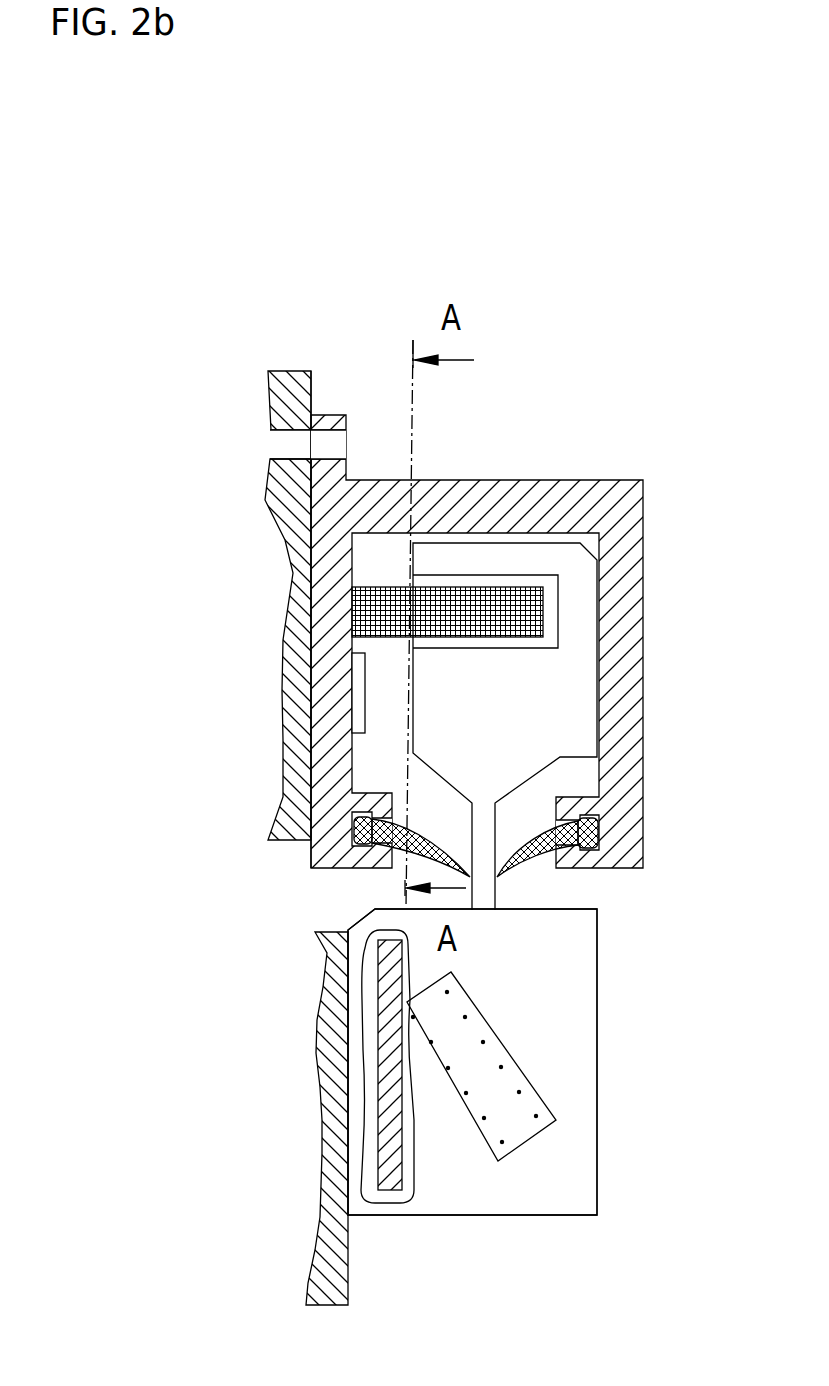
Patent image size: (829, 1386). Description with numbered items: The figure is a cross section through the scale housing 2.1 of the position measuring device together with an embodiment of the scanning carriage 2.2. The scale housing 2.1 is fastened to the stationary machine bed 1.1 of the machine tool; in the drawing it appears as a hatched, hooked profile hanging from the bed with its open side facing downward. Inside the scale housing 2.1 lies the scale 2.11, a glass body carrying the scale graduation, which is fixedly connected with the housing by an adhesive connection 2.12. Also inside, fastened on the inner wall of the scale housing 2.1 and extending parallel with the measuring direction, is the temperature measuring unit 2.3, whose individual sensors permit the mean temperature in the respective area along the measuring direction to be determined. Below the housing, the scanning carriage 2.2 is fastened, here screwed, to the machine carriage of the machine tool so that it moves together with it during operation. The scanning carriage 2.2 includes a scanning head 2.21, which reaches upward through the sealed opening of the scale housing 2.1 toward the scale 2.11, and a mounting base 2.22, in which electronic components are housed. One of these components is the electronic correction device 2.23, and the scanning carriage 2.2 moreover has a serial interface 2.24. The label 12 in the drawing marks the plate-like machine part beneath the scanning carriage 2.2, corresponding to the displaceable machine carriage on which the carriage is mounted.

The machine bed 1.1 is at (272, 397).
The scale housing 2.1 is at (308, 789).
The adhesive connection 2.12 is at (296, 510).
The scale 2.11 is at (377, 622).
The temperature measuring unit 2.3 is at (362, 699).
The scanning head 2.21 is at (547, 695).
The scanning carriage 2.2 is at (605, 957).
The mounting base 2.22 is at (563, 1031).
The serial interface 2.24 is at (527, 1107).
The electronic correction device 2.23 is at (388, 1135).
The lower support plate 12 is at (332, 1264).